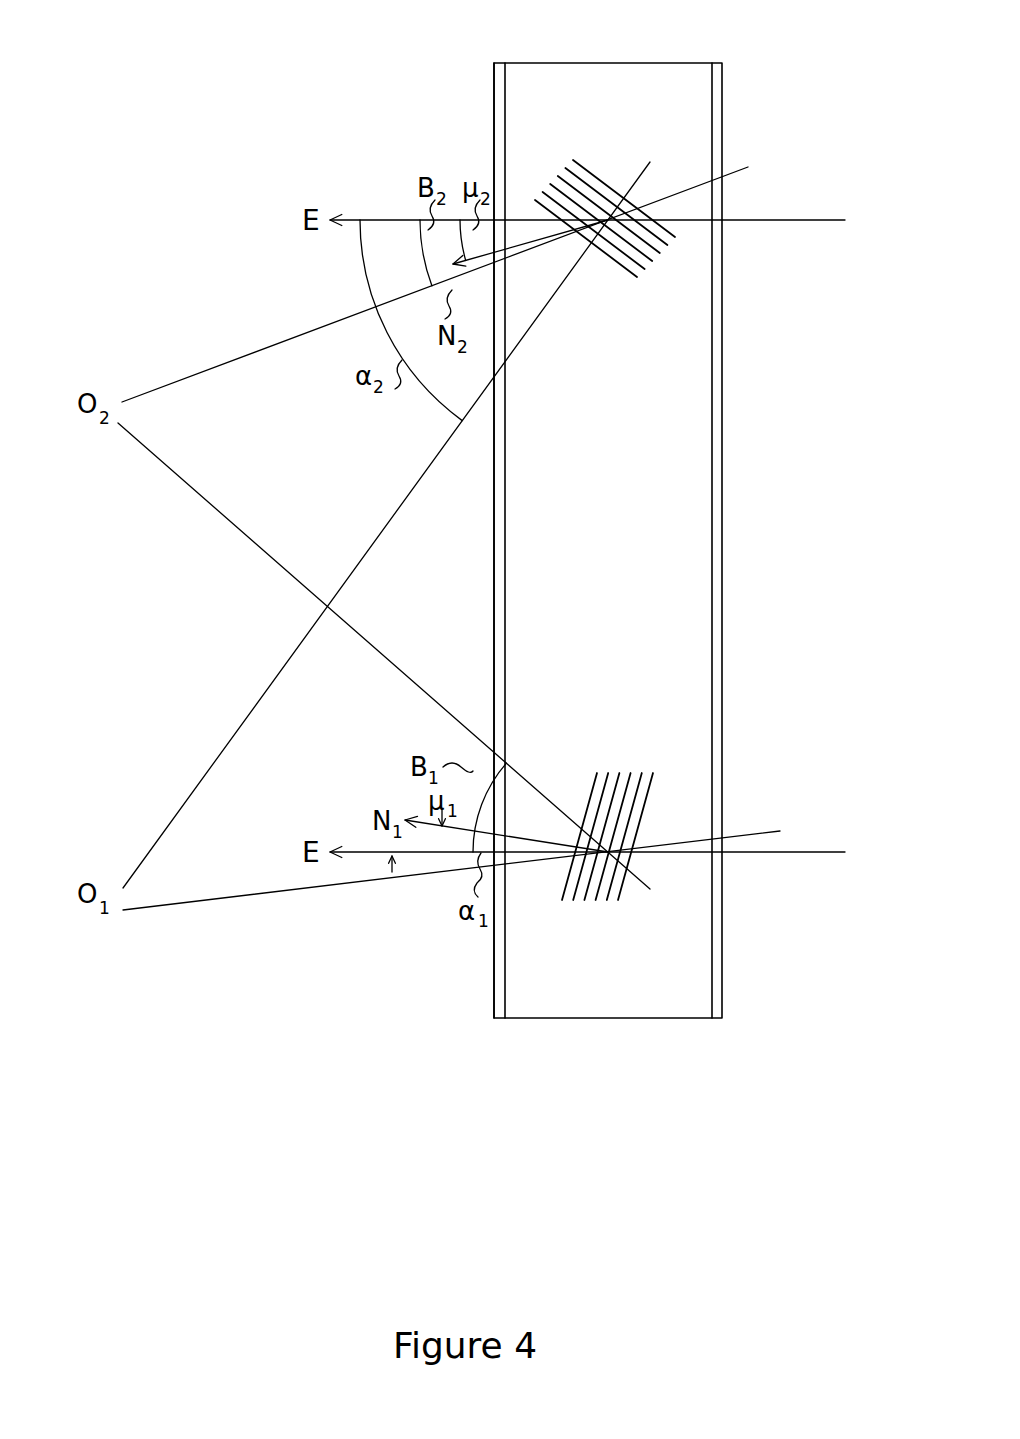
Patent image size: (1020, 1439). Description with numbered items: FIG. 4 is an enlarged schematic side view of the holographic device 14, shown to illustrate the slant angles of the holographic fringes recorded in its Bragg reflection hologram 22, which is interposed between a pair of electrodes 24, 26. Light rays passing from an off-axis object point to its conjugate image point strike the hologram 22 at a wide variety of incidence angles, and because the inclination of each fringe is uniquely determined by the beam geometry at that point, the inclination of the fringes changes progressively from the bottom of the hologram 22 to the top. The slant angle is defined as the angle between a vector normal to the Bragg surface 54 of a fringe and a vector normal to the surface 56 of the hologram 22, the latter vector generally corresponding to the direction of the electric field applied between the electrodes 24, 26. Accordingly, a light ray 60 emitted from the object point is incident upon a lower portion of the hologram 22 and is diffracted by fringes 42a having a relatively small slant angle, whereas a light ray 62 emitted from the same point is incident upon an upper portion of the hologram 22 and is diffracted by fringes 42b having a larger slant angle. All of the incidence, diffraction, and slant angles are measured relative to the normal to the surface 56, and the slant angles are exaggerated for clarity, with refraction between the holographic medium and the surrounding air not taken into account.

The holographic device 14 is at (598, 41).
The Bragg reflection hologram 22 is at (698, 535).
The electrode 24 is at (494, 84).
The electrode 26 is at (717, 82).
The fringes 42a is at (617, 900).
The fringes 42b is at (670, 240).
The Bragg surface 54 is at (630, 273).
The surface of the hologram 56 is at (505, 991).
The light ray 60 is at (225, 900).
The light ray 62 is at (373, 550).